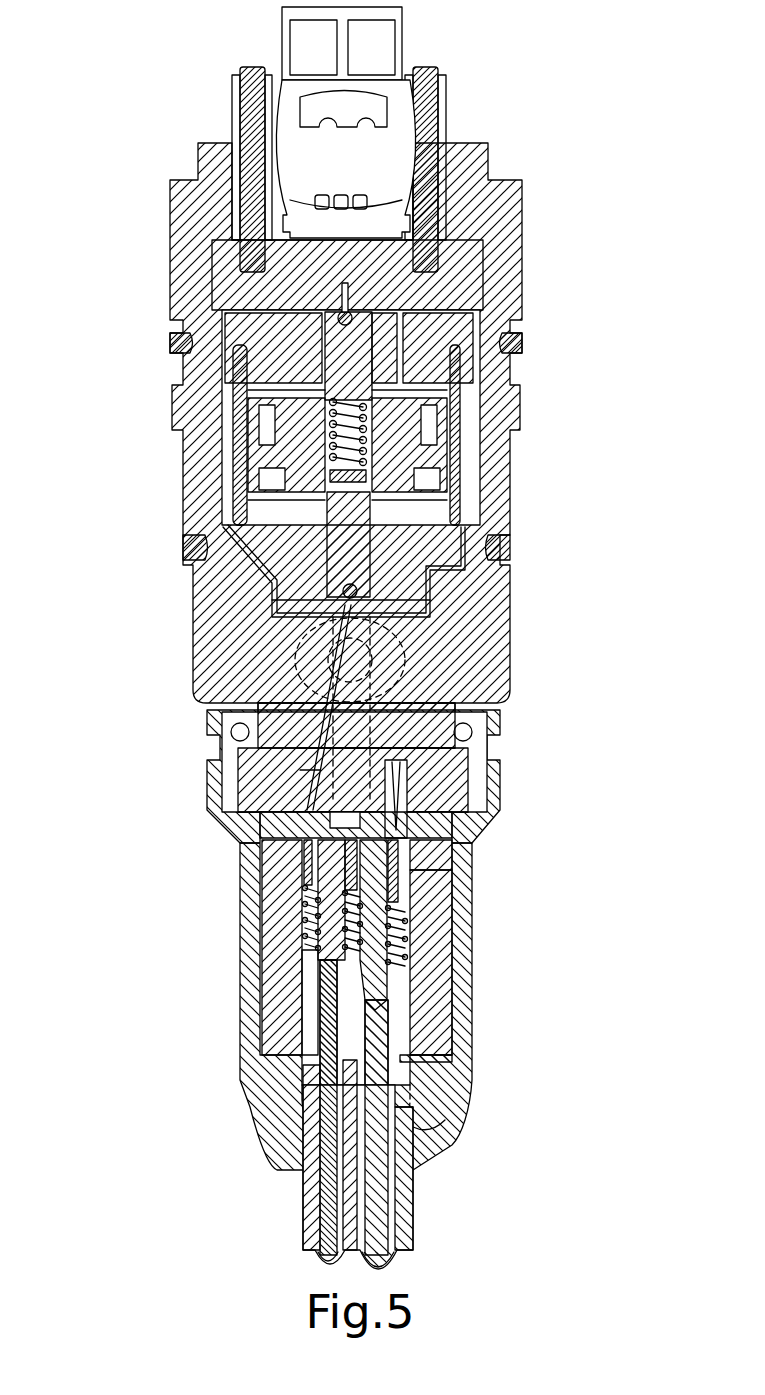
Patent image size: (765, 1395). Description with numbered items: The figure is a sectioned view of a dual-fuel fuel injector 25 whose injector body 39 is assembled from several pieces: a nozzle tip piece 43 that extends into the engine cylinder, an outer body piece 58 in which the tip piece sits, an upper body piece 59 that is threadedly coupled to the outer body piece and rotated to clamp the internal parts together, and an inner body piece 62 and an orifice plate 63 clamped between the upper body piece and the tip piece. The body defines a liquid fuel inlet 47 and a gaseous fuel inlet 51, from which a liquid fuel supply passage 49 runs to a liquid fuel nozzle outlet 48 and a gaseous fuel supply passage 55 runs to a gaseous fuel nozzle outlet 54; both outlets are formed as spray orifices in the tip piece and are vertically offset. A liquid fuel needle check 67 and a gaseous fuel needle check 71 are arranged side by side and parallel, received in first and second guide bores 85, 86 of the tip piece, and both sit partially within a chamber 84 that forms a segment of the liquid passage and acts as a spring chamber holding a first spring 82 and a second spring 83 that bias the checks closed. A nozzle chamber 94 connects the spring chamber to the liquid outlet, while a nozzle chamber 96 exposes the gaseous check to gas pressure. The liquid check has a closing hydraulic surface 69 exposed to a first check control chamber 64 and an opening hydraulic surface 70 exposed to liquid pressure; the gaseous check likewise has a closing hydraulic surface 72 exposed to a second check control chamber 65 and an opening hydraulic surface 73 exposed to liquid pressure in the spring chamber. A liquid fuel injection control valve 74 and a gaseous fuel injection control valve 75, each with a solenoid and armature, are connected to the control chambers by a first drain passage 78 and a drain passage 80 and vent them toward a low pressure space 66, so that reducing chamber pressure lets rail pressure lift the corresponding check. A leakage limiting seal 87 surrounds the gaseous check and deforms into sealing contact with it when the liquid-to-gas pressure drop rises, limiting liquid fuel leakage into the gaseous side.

The fuel injector 25 is at (78, 146).
The injector body 39 is at (183, 398).
The nozzle tip piece 43 is at (415, 1220).
The liquid fuel inlet 47 is at (383, 677).
The liquid fuel nozzle outlet 48 is at (315, 1250).
The liquid fuel supply passage 49 is at (347, 690).
The gaseous fuel inlet 51 is at (415, 652).
The gaseous fuel nozzle outlet 54 is at (397, 1253).
The gaseous fuel supply passage 55 is at (330, 772).
The outer body piece 58 is at (470, 1085).
The upper body piece 59 is at (517, 487).
The inner body piece 62 is at (440, 900).
The orifice plate 63 is at (445, 818).
The first check control chamber 64 is at (300, 840).
The second check control chamber 65 is at (447, 846).
The low pressure space 66 is at (392, 310).
The liquid fuel needle check 67 is at (317, 983).
The closing hydraulic surface 69 is at (307, 838).
The opening hydraulic surface 70 is at (318, 968).
The gaseous fuel needle check 71 is at (377, 1037).
The closing hydraulic surface 72 is at (397, 778).
The opening hydraulic surface 73 is at (410, 1010).
The liquid fuel injection control valve 74 is at (322, 587).
The gaseous fuel injection control valve 75 is at (315, 330).
The first drain passage 78 is at (303, 795).
The drain passage 80 is at (383, 782).
The first spring 82 is at (308, 897).
The second spring 83 is at (407, 927).
The chamber 84 is at (306, 1023).
The first guide bore 85 is at (303, 1087).
The second guide bore 86 is at (403, 1095).
The leakage limiting seal 87 is at (410, 1062).
The nozzle chamber 94 is at (315, 1198).
The nozzle chamber 96 is at (392, 1190).